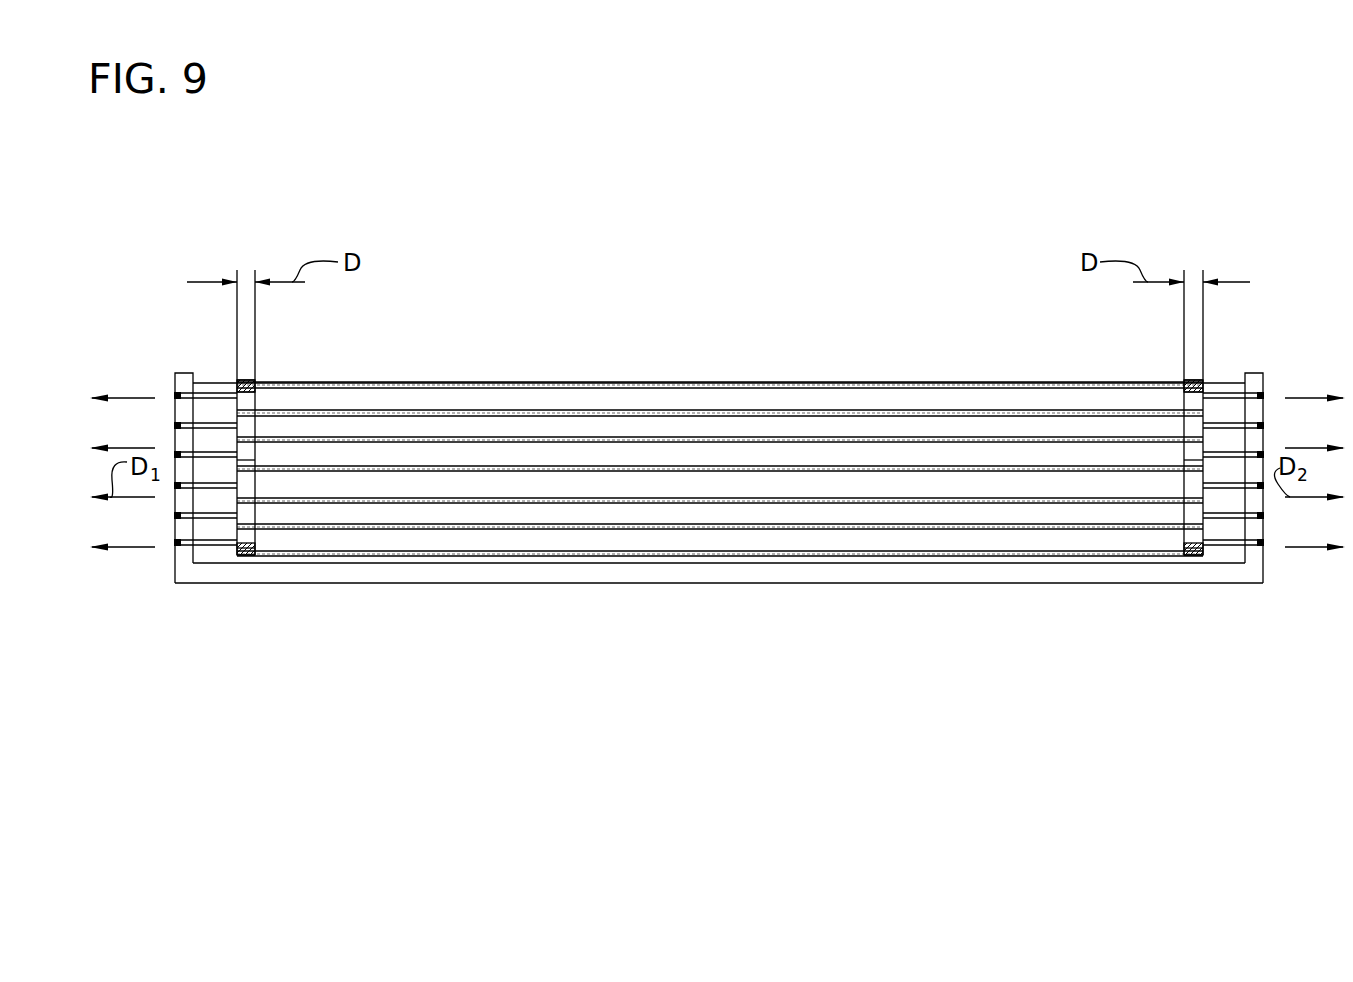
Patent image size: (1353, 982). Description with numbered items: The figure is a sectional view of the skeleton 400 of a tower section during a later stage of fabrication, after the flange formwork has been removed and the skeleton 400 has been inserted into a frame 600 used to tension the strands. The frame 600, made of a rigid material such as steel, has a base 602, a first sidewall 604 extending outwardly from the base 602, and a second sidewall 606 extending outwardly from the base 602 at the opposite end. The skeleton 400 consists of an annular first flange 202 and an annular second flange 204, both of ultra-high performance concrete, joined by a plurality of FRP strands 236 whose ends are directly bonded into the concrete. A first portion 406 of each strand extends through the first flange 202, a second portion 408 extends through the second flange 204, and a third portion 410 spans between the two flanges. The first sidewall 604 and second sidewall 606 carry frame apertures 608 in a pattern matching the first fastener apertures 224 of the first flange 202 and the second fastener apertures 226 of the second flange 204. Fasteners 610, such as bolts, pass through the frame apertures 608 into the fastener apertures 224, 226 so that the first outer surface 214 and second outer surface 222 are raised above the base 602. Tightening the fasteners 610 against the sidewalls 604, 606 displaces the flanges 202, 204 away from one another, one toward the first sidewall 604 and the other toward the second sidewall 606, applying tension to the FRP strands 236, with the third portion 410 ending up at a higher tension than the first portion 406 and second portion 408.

The skeleton 400 is at (1170, 208).
The frame 600 is at (182, 592).
The base 602 is at (840, 583).
The first sidewall 604 is at (175, 373).
The second sidewall 606 is at (1263, 373).
The frame apertures 608 is at (180, 430).
The fasteners 610 is at (205, 487).
The first flange 202 is at (250, 372).
The second flange 204 is at (1192, 372).
The first outer surface 214 is at (248, 556).
The second outer surface 222 is at (1190, 555).
The first fastener apertures 224 is at (247, 463).
The second fastener apertures 226 is at (1191, 463).
The FRP strands 236 is at (642, 437).
The first portion 406 is at (252, 408).
The second portion 408 is at (1192, 408).
The third portion 410 is at (732, 443).